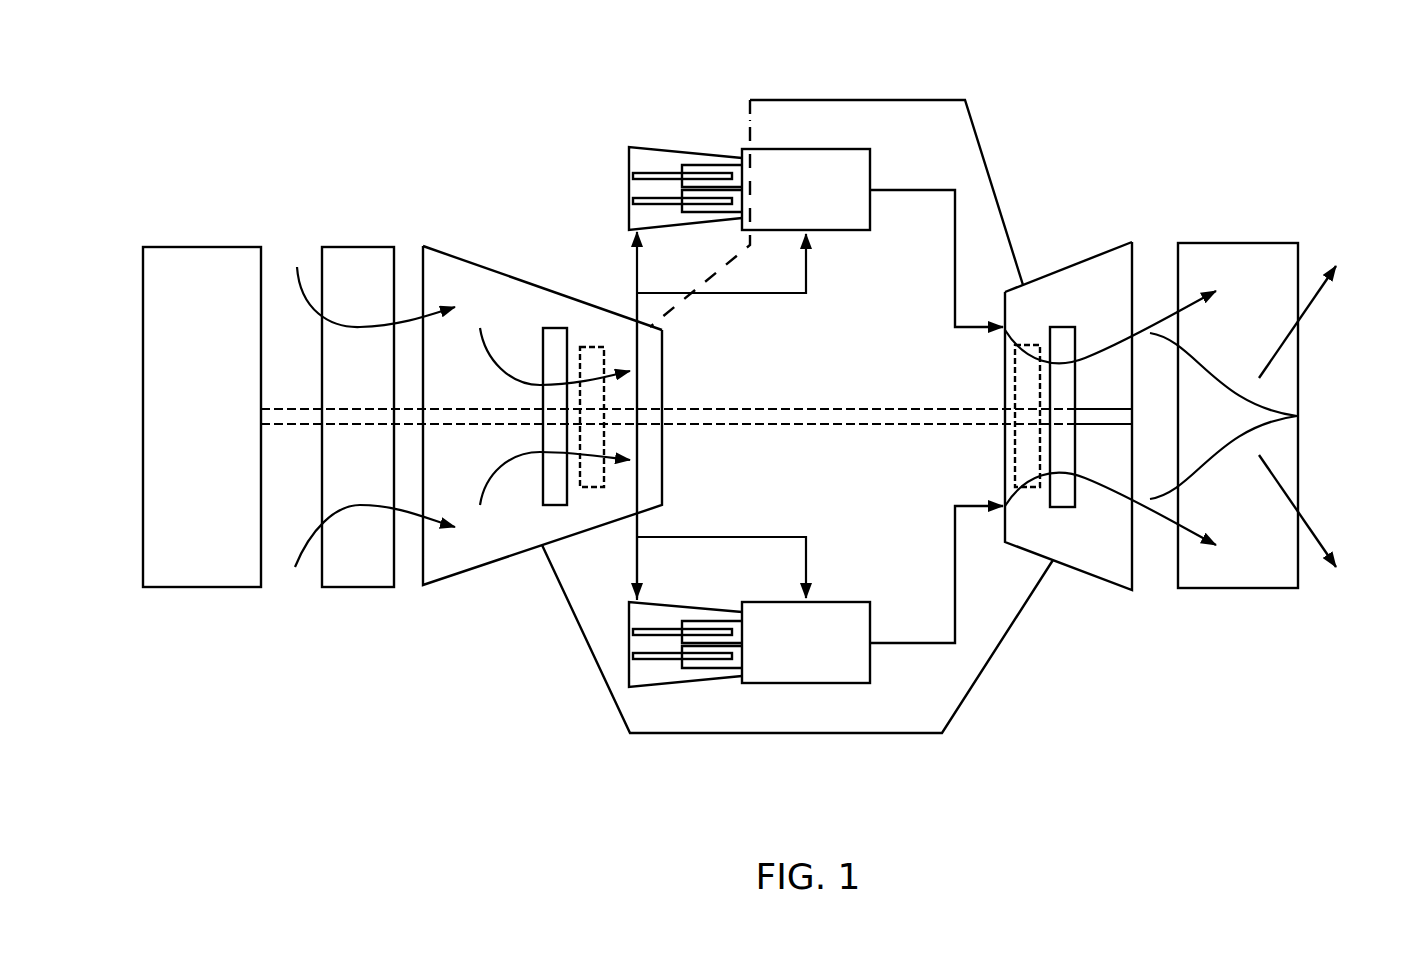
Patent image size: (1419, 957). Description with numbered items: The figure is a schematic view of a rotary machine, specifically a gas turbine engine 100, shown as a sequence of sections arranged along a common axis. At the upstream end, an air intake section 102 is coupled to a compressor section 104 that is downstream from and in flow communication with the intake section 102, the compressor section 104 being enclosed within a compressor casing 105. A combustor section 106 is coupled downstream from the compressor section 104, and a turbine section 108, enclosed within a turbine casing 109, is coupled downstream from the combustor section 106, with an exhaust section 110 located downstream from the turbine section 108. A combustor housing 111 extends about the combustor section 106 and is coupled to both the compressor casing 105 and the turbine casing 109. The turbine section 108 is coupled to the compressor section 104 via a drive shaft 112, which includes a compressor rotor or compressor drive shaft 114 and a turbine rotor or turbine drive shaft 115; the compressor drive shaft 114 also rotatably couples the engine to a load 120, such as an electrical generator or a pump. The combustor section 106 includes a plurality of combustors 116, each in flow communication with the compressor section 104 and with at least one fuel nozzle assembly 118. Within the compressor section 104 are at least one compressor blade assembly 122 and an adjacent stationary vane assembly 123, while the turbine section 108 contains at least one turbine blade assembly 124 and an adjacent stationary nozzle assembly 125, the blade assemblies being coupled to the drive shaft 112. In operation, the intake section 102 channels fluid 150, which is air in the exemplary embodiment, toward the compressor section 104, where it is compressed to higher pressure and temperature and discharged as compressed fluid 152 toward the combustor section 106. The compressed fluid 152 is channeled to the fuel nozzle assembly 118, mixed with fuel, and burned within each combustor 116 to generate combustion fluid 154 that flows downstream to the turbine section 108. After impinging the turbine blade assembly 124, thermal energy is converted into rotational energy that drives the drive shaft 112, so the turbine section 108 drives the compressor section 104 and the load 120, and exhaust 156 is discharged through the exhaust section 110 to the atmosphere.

The gas turbine engine 100 is at (258, 115).
The air intake section 102 is at (357, 246).
The compressor section 104 is at (478, 248).
The compressor casing 105 is at (502, 268).
The combustor section 106 is at (1032, 106).
The turbine section 108 is at (1103, 238).
The turbine casing 109 is at (1069, 266).
The exhaust section 110 is at (1239, 242).
The combustor housing 111 is at (791, 99).
The drive shaft 112 is at (756, 393).
The compressor drive shaft 114 is at (447, 412).
The turbine drive shaft 115 is at (1109, 408).
The combustor 116 is at (850, 148).
The fuel nozzle assembly 118 is at (643, 162).
The load 120 is at (203, 246).
The compressor blade assembly 122 is at (592, 488).
The stationary vane assembly 123 is at (555, 506).
The turbine blade assembly 124 is at (1028, 488).
The stationary nozzle assembly 125 is at (1063, 508).
The fluid 150 is at (297, 267).
The compressed fluid 152 is at (637, 259).
The combustion fluid 154 is at (1298, 416).
The exhaust 156 is at (1312, 306).